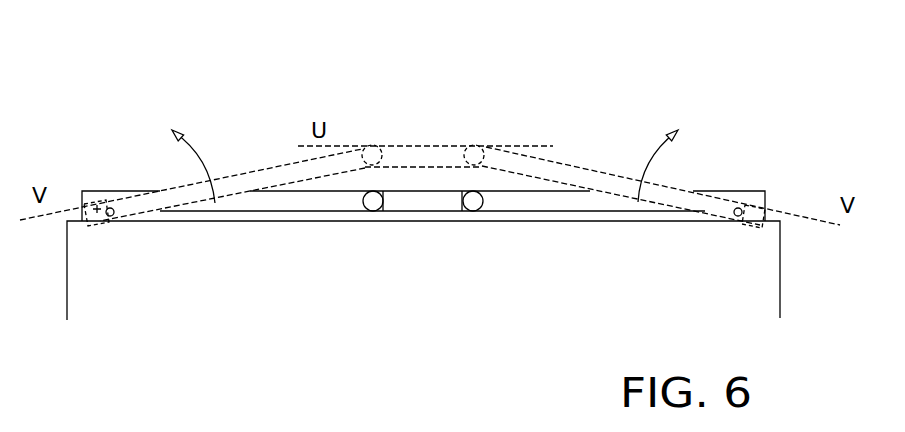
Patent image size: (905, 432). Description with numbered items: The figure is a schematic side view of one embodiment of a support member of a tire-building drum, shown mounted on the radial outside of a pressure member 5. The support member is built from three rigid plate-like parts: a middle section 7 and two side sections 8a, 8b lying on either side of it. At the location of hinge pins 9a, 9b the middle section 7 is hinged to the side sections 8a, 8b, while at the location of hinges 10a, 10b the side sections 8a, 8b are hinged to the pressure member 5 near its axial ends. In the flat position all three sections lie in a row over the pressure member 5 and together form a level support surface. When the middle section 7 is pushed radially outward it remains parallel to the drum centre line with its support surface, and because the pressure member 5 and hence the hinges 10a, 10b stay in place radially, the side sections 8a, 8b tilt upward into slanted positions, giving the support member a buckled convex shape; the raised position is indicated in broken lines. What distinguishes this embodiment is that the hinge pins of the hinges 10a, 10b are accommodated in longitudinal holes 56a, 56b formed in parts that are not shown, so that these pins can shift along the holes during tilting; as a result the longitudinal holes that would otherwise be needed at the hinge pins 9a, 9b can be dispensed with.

The pressure member 5 is at (518, 293).
The middle section 7 is at (426, 155).
The side section 8a is at (585, 172).
The side section 8b is at (247, 182).
The hinge pin 9a is at (477, 147).
The hinge pin 9b is at (377, 145).
The hinge 10a is at (734, 214).
The hinge 10b is at (114, 216).
The longitudinal hole 56a is at (757, 191).
The longitudinal hole 56b is at (97, 190).